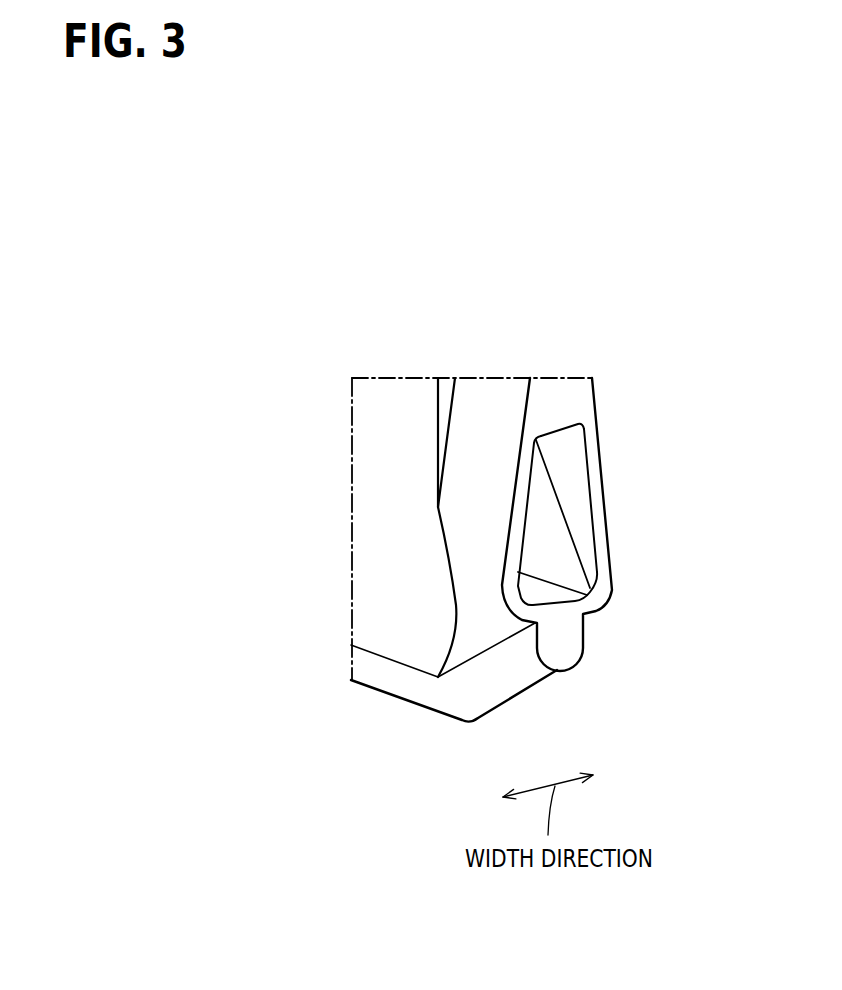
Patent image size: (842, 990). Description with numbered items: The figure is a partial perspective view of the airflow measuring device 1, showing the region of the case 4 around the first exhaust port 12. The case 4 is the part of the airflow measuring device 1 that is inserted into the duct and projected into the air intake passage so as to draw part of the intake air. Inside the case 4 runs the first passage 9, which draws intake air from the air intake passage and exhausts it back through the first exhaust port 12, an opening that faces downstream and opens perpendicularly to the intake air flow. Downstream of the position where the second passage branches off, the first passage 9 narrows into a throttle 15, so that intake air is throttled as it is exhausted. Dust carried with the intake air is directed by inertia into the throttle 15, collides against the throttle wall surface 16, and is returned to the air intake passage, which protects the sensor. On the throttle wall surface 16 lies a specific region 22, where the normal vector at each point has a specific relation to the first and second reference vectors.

The airflow measuring device 1 is at (695, 287).
The case 4 is at (295, 338).
The first passage 9 is at (537, 558).
The first exhaust port 12 is at (594, 512).
The throttle 15 is at (595, 551).
The throttle wall surface 16 is at (570, 562).
The specific region 22 is at (573, 460).